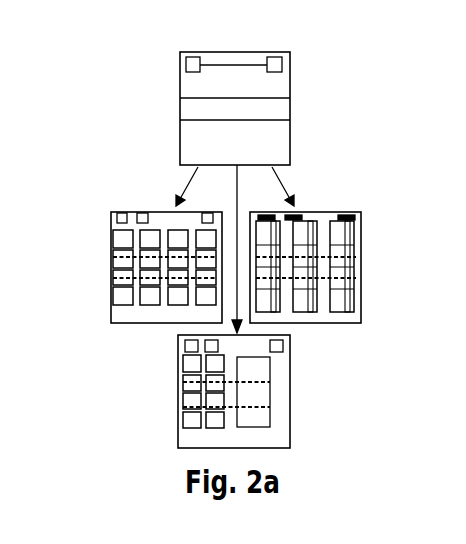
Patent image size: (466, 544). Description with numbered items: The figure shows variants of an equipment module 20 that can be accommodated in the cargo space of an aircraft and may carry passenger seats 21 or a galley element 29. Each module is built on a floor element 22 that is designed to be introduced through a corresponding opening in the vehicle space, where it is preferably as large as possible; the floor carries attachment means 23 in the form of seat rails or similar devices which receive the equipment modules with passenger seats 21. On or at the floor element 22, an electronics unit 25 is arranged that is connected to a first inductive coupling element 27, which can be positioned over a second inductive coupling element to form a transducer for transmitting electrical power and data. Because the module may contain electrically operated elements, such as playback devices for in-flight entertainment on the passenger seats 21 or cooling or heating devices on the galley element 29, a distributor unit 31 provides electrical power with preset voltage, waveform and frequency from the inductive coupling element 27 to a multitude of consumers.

The equipment module 20 is at (323, 205).
The passenger seat 21 is at (122, 300).
The floor element 22 is at (195, 88).
The attachment means 23 is at (280, 118).
The electronics unit 25 is at (281, 65).
The first inductive coupling element 27 is at (190, 65).
The galley element 29 is at (258, 420).
The distributor unit 31 is at (142, 212).